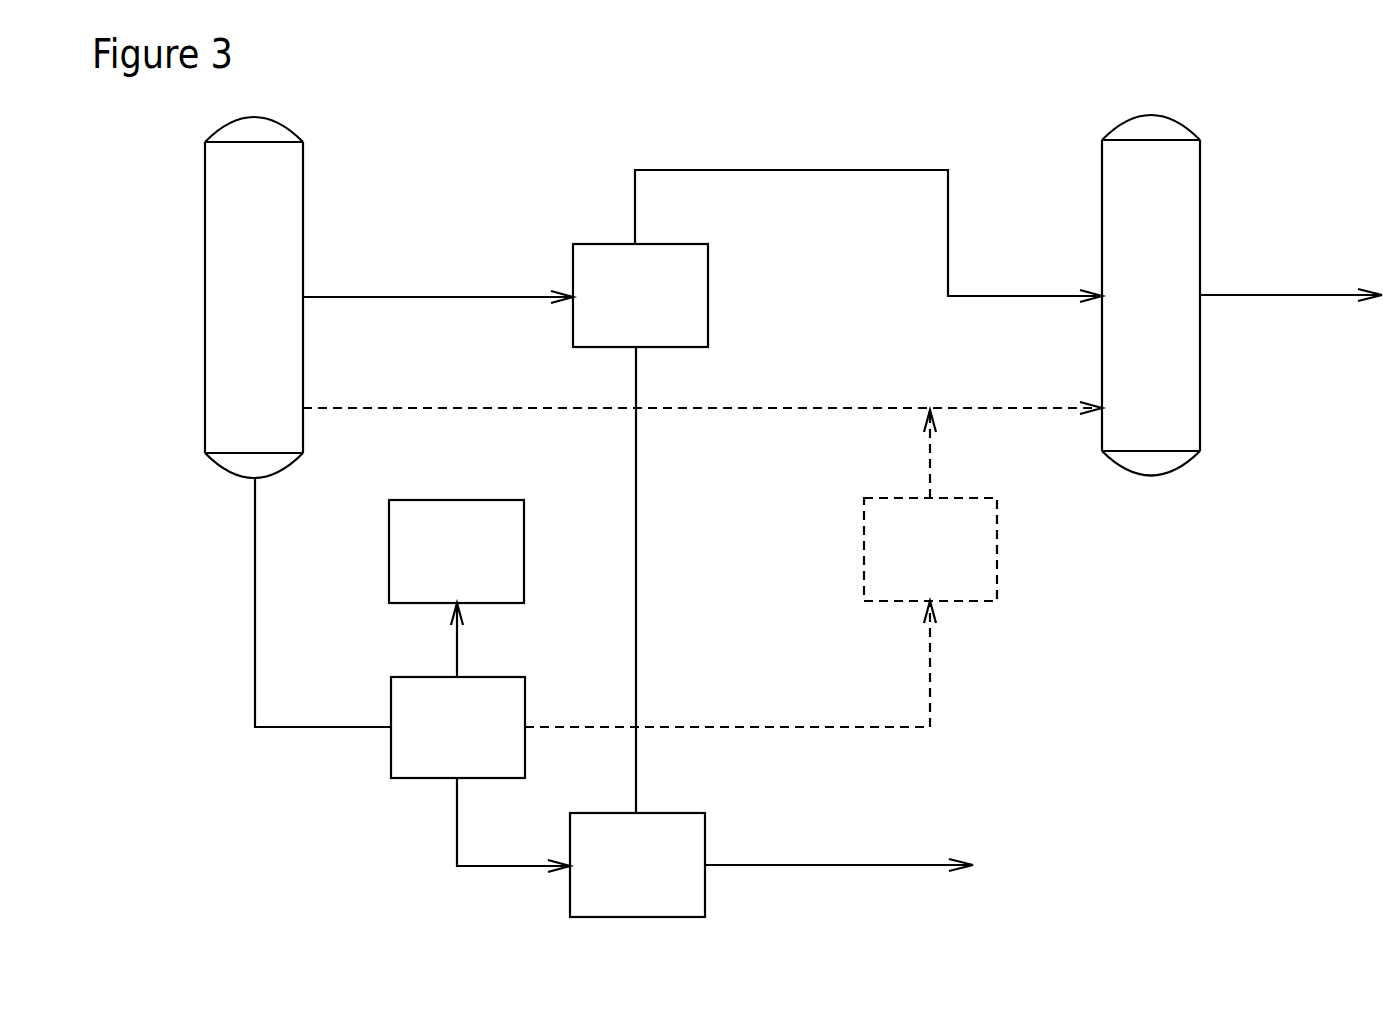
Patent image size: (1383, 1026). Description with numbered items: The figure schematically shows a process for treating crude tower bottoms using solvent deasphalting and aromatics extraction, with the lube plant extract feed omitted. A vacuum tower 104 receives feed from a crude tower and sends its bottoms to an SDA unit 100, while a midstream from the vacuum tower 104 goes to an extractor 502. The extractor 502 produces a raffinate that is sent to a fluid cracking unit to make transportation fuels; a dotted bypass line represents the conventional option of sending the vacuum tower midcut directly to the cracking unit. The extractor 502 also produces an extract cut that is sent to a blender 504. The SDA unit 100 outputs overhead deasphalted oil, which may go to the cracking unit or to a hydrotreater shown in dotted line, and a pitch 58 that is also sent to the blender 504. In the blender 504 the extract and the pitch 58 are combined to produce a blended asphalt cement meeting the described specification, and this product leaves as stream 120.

The vacuum tower 104 is at (254, 297).
The extractor 502 is at (640, 295).
The SDA unit 100 is at (458, 727).
The blender 504 is at (637, 865).
The pitch 58 is at (513, 825).
The product stream 120 is at (839, 855).